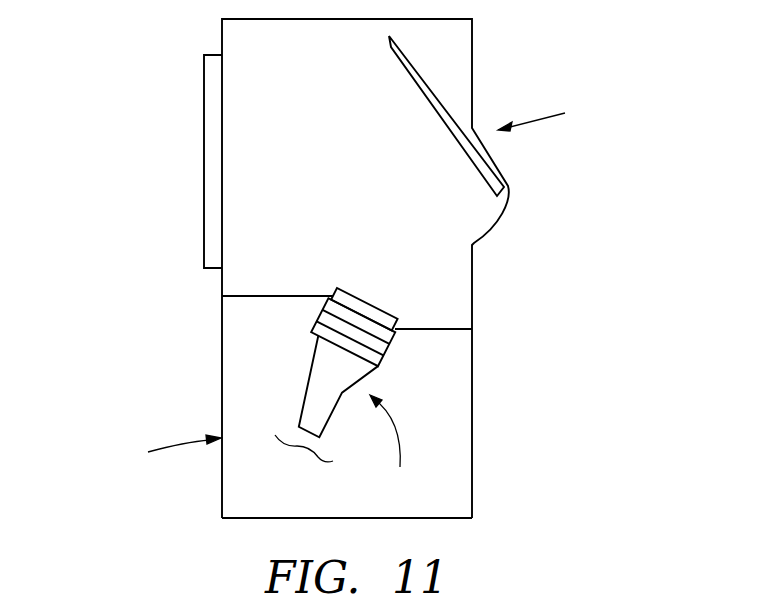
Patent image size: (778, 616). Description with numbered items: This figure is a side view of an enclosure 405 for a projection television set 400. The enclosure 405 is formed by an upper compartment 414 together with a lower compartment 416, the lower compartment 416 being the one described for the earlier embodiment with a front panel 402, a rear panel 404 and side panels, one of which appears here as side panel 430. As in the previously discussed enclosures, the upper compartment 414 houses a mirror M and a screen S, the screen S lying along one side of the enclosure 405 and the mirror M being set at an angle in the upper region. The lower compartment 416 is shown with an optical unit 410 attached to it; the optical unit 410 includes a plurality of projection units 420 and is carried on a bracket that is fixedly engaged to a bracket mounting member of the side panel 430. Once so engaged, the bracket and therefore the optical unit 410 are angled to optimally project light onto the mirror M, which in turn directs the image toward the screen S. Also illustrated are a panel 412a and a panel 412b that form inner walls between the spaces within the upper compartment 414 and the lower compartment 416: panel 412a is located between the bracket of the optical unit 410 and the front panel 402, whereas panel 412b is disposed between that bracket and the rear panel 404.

The projection television set 400 is at (112, 115).
The front panel 402 is at (222, 372).
The rear panel 404 is at (473, 393).
The enclosure 405 is at (551, 112).
The optical unit 410 is at (396, 444).
The panel 412a is at (276, 296).
The panel 412b is at (432, 329).
The upper compartment 414 is at (270, 38).
The lower compartment 416 is at (164, 450).
The projection unit 420 is at (304, 457).
The side panel 430 is at (458, 497).
The screen S is at (204, 220).
The mirror M is at (430, 98).